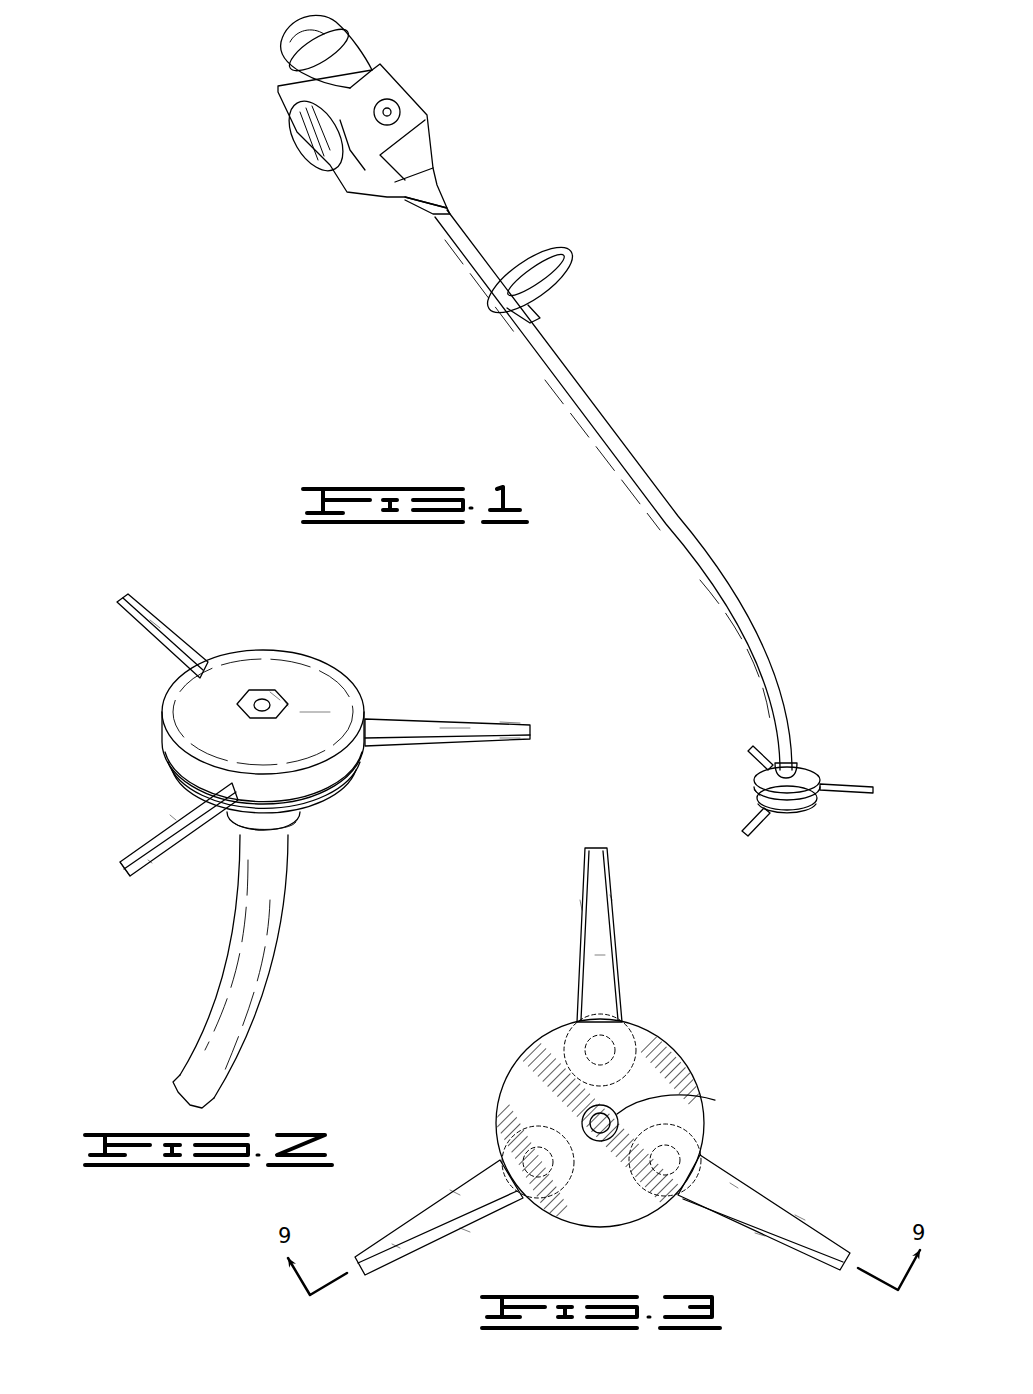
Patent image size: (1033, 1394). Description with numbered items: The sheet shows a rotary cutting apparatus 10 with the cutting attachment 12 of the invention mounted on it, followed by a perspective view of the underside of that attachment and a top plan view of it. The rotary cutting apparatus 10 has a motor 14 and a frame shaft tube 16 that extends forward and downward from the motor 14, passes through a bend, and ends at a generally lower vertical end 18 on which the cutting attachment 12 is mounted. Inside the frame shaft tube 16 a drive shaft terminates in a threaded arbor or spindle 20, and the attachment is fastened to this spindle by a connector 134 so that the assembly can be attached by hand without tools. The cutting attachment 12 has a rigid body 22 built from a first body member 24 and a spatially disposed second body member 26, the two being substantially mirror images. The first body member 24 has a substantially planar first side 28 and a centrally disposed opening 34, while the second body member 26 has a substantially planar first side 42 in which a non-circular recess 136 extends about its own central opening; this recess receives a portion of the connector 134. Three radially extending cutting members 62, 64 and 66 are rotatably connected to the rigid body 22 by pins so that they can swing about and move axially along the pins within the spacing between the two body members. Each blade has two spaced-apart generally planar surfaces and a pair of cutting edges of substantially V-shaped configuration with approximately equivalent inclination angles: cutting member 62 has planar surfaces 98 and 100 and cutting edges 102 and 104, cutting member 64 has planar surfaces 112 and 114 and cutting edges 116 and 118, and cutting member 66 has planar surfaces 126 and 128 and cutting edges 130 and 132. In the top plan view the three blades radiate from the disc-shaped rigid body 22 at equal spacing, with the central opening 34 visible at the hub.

In FIG. 1, the rotary cutting apparatus 10 is at (595, 430).
In FIG. 1, the cutting attachment 12 is at (788, 776).
In FIG. 2, the cutting attachment 12 is at (320, 736).
In FIG. 3, the cutting attachment 12 is at (603, 1065).
In FIG. 1, the motor 14 is at (415, 95).
In FIG. 1, the frame shaft tube 16 is at (620, 418).
In FIG. 2, the frame shaft tube 16 is at (295, 905).
In FIG. 1, the lower vertical end 18 is at (757, 778).
In FIG. 2, the lower vertical end 18 is at (302, 818).
In FIG. 2, the threaded arbor or spindle 20 is at (263, 698).
In FIG. 1, the rigid body 22 is at (745, 797).
In FIG. 2, the rigid body 22 is at (271, 728).
In FIG. 3, the rigid body 22 is at (620, 1120).
In FIG. 1, the first body member 24 is at (820, 775).
In FIG. 2, the first body member 24 is at (352, 785).
In FIG. 3, the first body member 24 is at (680, 1073).
In FIG. 1, the second body member 26 is at (800, 812).
In FIG. 2, the second body member 26 is at (163, 702).
In FIG. 3, the substantially planar first side 28 is at (545, 1108).
In FIG. 3, the centrally disposed opening 34 is at (688, 1098).
In FIG. 2, the substantially planar first side 42 is at (328, 716).
In FIG. 1, the cutting member 62 is at (745, 823).
In FIG. 2, the cutting member 62 is at (479, 723).
In FIG. 3, the cutting member 62 is at (432, 1221).
In FIG. 1, the cutting member 64 is at (763, 755).
In FIG. 2, the cutting member 64 is at (174, 624).
In FIG. 3, the cutting member 64 is at (607, 935).
In FIG. 1, the cutting member 66 is at (852, 790).
In FIG. 2, the cutting member 66 is at (143, 842).
In FIG. 3, the cutting member 66 is at (775, 1207).
In FIG. 3, the first planar surface 98 is at (395, 1246).
In FIG. 2, the second planar surface 100 is at (452, 728).
In FIG. 2, the cutting edge 102 is at (520, 722).
In FIG. 3, the cutting edge 102 is at (455, 1188).
In FIG. 2, the cutting edge 104 is at (522, 740).
In FIG. 3, the cutting edge 104 is at (465, 1230).
In FIG. 3, the first planar surface 112 is at (598, 955).
In FIG. 2, the second planar surface 114 is at (160, 633).
In FIG. 3, the cutting edge 116 is at (612, 893).
In FIG. 3, the cutting edge 118 is at (582, 905).
In FIG. 3, the first planar surface 126 is at (735, 1185).
In FIG. 2, the second planar surface 128 is at (175, 815).
In FIG. 2, the cutting edge 130 is at (150, 862).
In FIG. 3, the cutting edge 130 is at (763, 1236).
In FIG. 2, the cutting edge 132 is at (125, 866).
In FIG. 3, the cutting edge 132 is at (800, 1218).
In FIG. 2, the connector 134 is at (280, 690).
In FIG. 2, the non-circular recess 136 is at (288, 702).